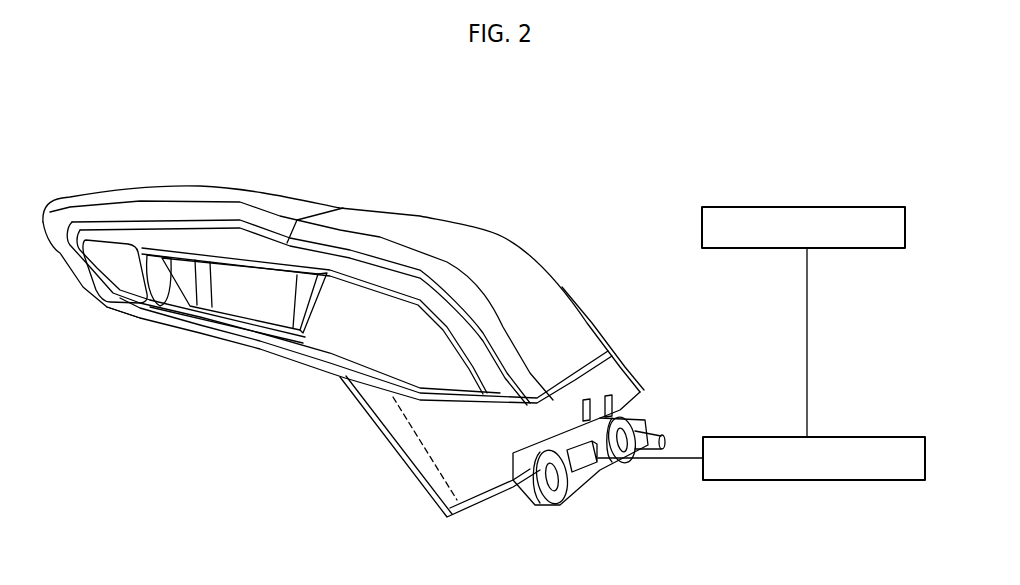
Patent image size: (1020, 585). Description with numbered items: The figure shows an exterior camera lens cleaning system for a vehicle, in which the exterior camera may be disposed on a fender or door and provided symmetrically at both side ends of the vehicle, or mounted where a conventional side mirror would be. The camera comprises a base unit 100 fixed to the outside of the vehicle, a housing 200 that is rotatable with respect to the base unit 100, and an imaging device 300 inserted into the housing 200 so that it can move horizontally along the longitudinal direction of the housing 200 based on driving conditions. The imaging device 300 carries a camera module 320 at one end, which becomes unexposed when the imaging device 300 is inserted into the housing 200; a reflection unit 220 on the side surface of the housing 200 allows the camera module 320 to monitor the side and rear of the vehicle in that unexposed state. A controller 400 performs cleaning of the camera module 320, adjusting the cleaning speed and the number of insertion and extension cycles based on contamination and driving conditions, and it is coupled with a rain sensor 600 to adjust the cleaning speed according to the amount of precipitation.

The base unit 100 is at (453, 440).
The housing 200 is at (403, 223).
The reflection unit 220 is at (183, 287).
The imaging device 300 is at (220, 200).
The camera module 320 is at (110, 277).
The controller 400 is at (890, 437).
The rain sensor 600 is at (702, 228).